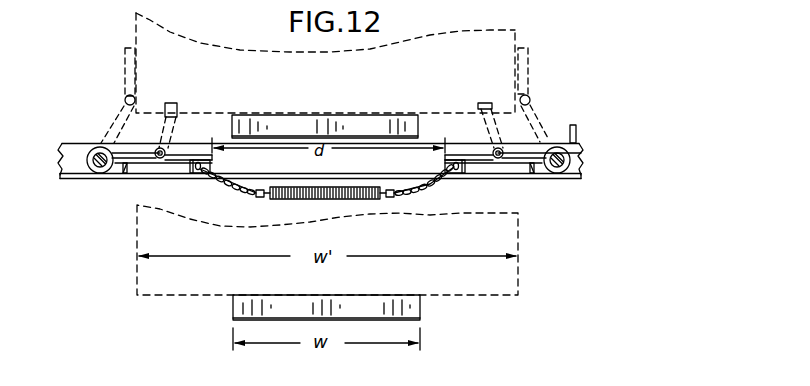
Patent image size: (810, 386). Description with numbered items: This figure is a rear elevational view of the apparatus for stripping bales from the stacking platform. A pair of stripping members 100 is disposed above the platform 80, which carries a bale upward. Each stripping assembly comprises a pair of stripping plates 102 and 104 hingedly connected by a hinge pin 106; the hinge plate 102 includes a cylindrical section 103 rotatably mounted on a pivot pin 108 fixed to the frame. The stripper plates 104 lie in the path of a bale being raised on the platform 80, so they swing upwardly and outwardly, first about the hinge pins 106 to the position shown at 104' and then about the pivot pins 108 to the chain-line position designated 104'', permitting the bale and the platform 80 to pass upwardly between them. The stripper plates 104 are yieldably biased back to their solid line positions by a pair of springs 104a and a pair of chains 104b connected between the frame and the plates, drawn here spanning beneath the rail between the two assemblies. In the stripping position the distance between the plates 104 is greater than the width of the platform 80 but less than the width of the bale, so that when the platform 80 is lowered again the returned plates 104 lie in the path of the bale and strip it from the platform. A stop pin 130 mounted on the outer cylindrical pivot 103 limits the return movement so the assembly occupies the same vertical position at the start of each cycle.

The stripping member 100 is at (86, 90).
The stripping plate 102 is at (117, 125).
The cylindrical section 103 is at (577, 177).
The stripper plate 104 is at (328, 142).
The stripper plate intermediate position 104' is at (336, 98).
The stripper plate raised position 104'' is at (342, 62).
The spring 104a is at (358, 200).
The chain 104b is at (434, 182).
The hinge pin 106 is at (143, 156).
The pivot pin 108 is at (583, 160).
The stop pin 130 is at (578, 131).
The platform 80 is at (385, 116).